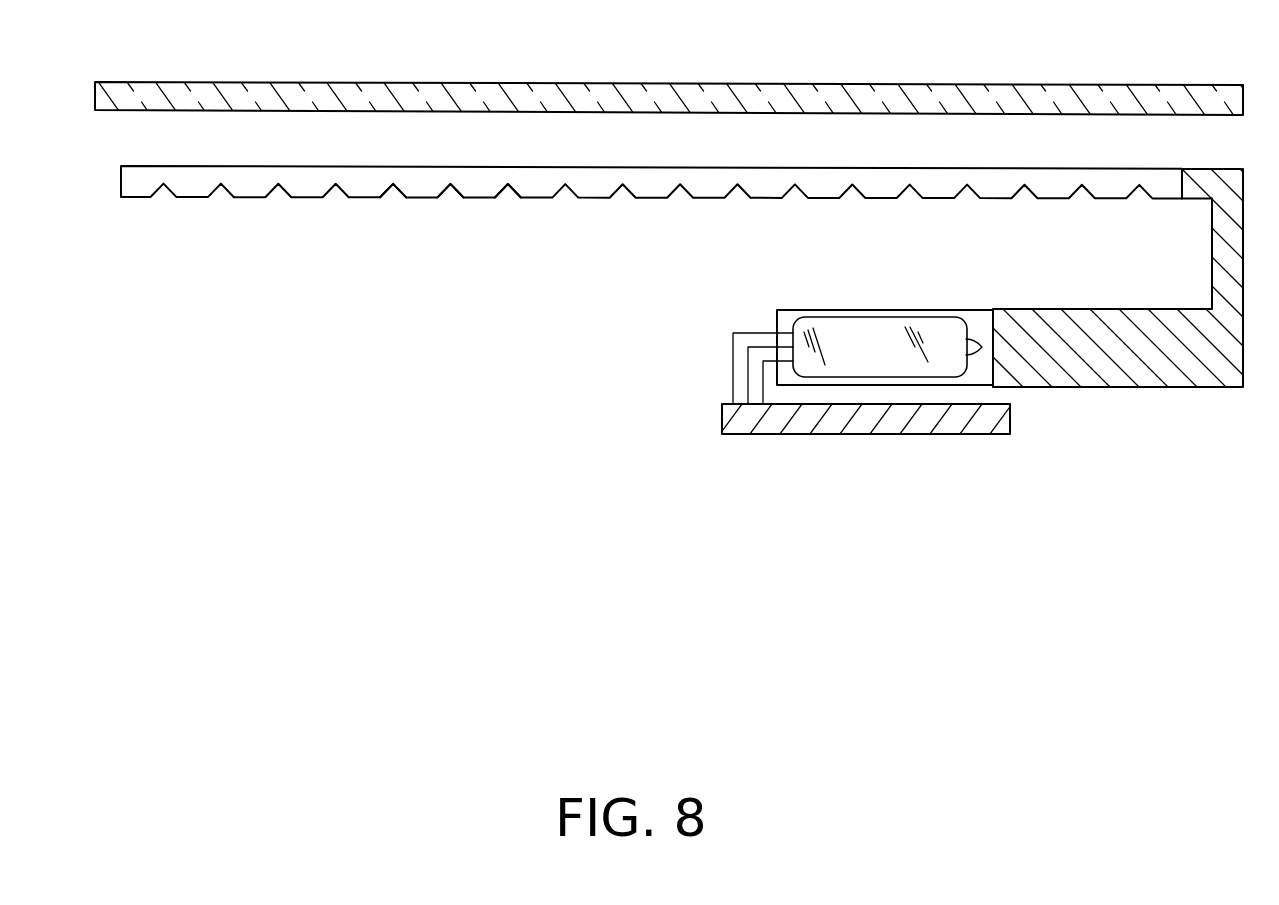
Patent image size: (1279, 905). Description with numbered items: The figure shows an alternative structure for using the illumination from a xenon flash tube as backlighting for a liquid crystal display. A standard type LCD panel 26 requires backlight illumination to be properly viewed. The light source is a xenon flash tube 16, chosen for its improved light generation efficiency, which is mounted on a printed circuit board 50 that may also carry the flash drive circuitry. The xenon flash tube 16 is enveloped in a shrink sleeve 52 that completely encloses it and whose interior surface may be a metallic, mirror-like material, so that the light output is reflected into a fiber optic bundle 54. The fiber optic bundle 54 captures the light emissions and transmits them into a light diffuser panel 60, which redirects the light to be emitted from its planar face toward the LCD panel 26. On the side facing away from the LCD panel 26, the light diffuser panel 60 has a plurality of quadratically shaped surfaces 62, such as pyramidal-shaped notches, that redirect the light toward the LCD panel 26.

The LCD panel 26 is at (152, 82).
The light diffuser panel 60 is at (188, 198).
The quadratically shaped surfaces 62 is at (398, 203).
The xenon flash tube 16 is at (824, 317).
The shrink sleeve 52 is at (957, 310).
The fiber optic bundle 54 is at (1185, 388).
The printed circuit board 50 is at (787, 435).